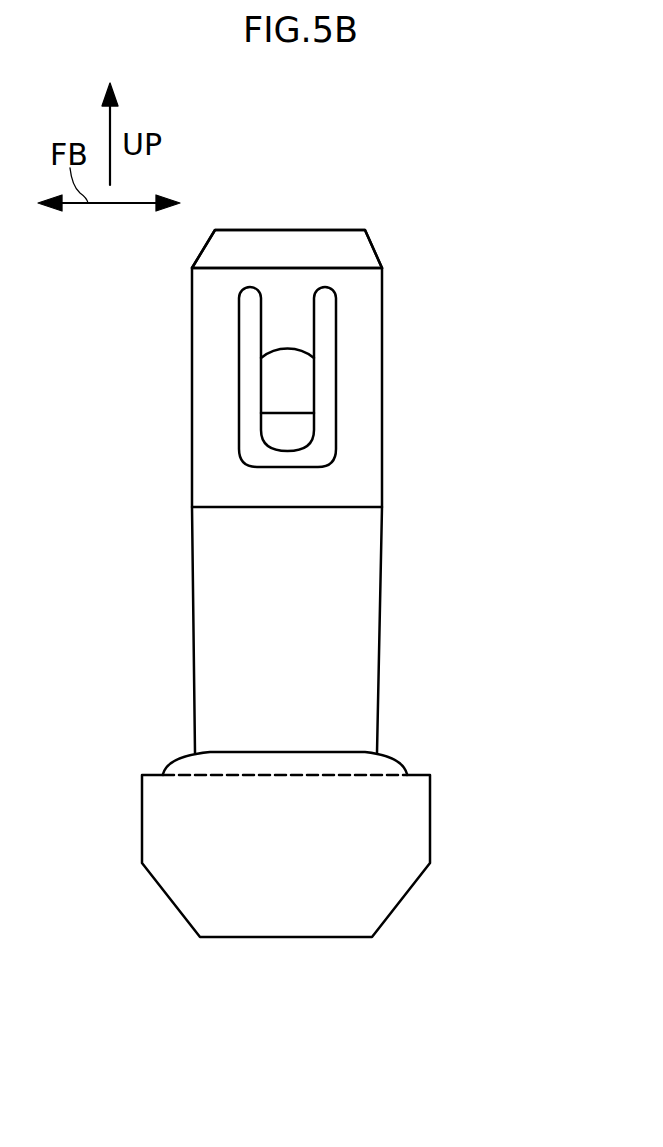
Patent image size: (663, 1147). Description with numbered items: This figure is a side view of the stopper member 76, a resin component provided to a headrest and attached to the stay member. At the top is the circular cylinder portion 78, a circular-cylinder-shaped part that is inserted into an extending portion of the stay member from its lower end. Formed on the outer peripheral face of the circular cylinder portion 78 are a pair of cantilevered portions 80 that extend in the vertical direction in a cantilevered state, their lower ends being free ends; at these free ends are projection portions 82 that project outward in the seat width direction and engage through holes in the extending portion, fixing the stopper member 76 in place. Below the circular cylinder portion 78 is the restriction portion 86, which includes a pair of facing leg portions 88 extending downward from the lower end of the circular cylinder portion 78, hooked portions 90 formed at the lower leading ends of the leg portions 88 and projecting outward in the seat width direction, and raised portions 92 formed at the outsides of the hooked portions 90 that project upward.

The stopper member 76 is at (413, 193).
The circular cylinder portion 78 is at (385, 253).
The cantilevered portions 80 is at (317, 328).
The projection portions 82 is at (308, 425).
The restriction portion 86 is at (142, 558).
The leg portions 88 is at (360, 580).
The hooked portions 90 is at (410, 820).
The raised portions 92 is at (255, 752).